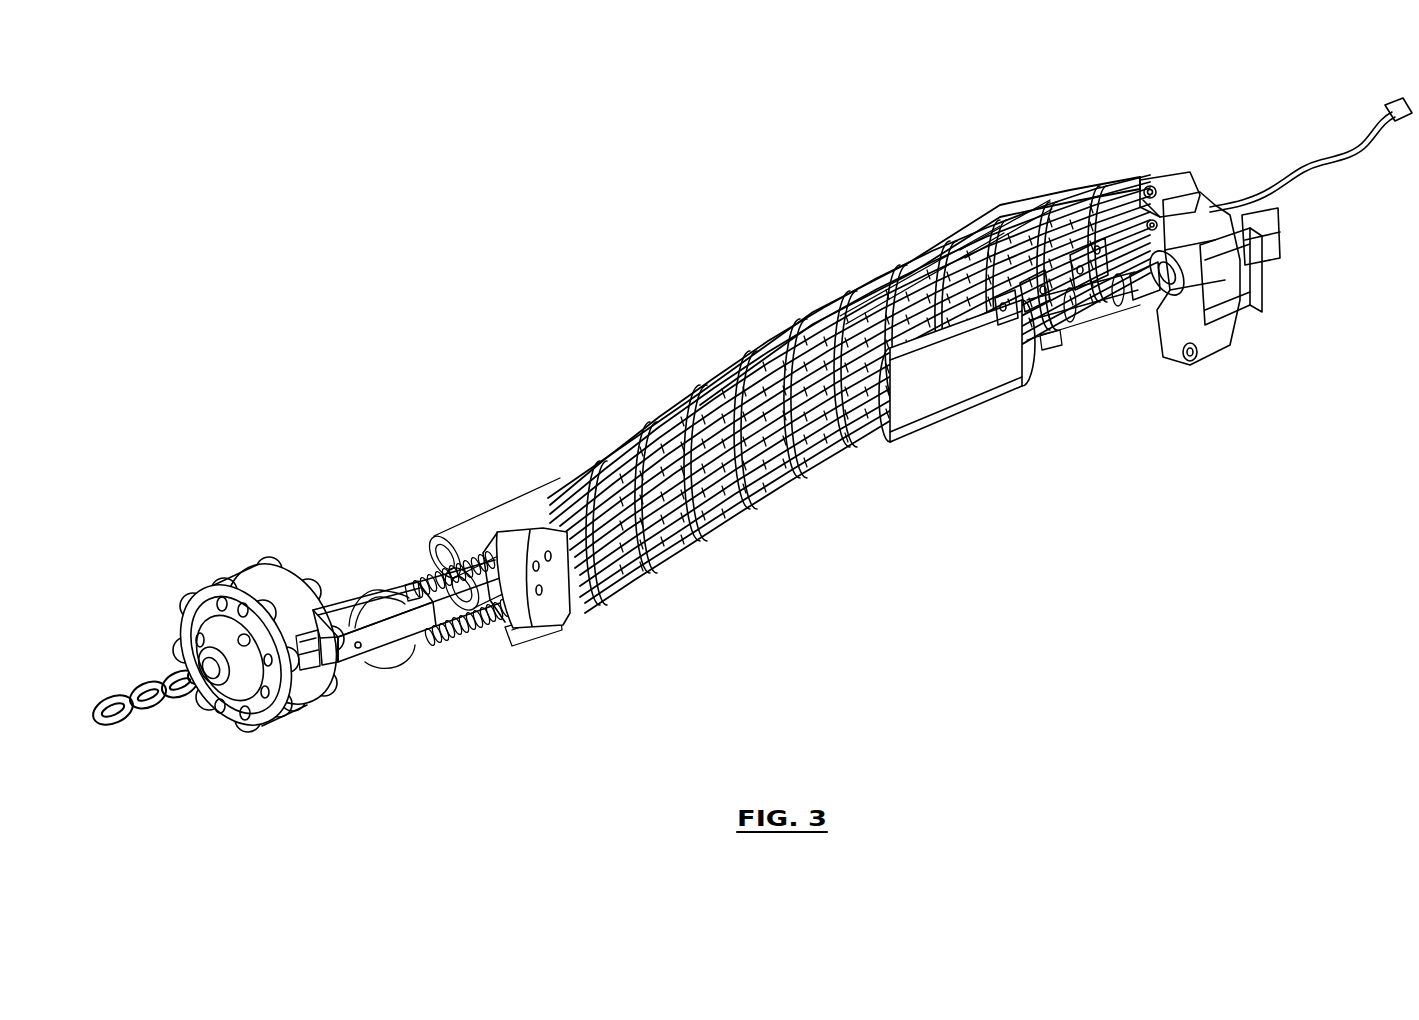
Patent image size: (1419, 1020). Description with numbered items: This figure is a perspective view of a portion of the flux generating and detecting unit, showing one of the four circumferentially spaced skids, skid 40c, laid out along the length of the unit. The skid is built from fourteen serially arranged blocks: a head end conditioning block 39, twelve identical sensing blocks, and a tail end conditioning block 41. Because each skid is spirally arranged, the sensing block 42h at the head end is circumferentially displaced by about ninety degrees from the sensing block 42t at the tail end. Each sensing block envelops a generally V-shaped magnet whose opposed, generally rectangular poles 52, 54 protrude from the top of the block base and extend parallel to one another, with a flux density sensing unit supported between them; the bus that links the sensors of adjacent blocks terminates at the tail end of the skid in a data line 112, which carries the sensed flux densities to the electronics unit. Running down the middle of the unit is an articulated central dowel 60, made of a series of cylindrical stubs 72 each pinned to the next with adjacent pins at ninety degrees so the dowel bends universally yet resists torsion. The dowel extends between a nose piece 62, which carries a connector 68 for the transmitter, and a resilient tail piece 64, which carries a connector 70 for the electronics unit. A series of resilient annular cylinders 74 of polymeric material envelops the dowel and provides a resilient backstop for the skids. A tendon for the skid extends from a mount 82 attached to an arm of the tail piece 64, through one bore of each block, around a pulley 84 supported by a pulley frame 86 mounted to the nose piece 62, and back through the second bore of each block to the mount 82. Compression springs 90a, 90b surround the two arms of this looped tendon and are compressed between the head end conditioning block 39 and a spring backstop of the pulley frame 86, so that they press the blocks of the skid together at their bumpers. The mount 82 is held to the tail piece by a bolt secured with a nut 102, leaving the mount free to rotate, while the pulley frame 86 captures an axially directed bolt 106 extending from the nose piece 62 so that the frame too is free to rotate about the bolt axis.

The head end conditioning block 39 is at (550, 645).
The skid 40c is at (910, 260).
The tail end conditioning block 41 is at (1050, 200).
The sensing block at the head end 42h is at (587, 593).
The sensing block at the tail end 42t is at (1007, 223).
The magnet pole 52 is at (577, 447).
The magnet pole 54 is at (768, 483).
The articulated central dowel 60 is at (1123, 310).
The nose piece 62 is at (272, 566).
The tail piece 64 is at (1223, 357).
The connector 68 is at (175, 705).
The connector 70 is at (1277, 253).
The cylindrical stub 72 is at (1070, 343).
The resilient annular cylinder 74 is at (928, 413).
The mount 82 is at (1097, 187).
The pulley 84 is at (410, 660).
The pulley frame 86 is at (350, 650).
The compression spring 90a is at (432, 573).
The compression spring 90b is at (467, 643).
The nut 102 is at (1185, 173).
The bolt 106 is at (323, 672).
The data line 112 is at (1290, 177).